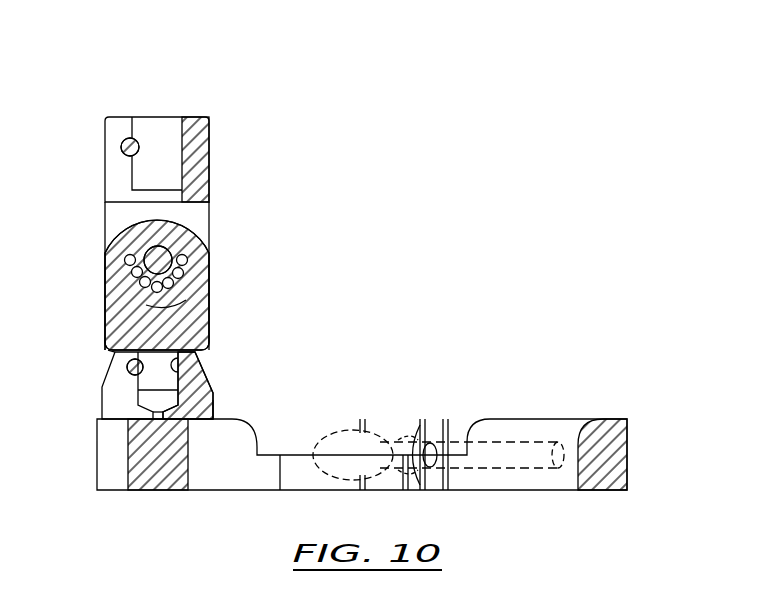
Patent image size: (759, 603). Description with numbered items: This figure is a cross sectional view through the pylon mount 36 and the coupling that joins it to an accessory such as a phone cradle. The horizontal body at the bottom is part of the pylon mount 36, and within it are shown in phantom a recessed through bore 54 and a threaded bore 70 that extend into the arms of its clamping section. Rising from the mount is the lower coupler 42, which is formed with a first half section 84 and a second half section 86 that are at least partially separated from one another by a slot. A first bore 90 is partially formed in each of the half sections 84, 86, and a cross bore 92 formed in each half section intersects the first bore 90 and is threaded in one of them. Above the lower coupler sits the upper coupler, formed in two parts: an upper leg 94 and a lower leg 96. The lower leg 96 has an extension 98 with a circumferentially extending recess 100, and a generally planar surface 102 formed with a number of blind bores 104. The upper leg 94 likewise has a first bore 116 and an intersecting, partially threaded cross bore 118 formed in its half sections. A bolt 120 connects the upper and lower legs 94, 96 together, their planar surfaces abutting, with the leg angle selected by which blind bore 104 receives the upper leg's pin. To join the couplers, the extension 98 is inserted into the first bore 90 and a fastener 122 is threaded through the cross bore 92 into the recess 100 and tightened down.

The pylon mount 36 is at (372, 419).
The lower coupler 42 is at (245, 355).
The recessed through bore 54 is at (345, 437).
The threaded bore 70 is at (528, 462).
The first half section 84 is at (154, 444).
The second half section 86 is at (213, 387).
The first bore 90 is at (145, 398).
The cross bore 92 is at (113, 345).
The upper leg 94 is at (206, 123).
The lower leg 96 is at (220, 280).
The extension 98 is at (162, 392).
The circumferentially extending recess 100 is at (203, 358).
The generally planar surface 102 is at (203, 217).
The blind bores 104 is at (183, 272).
The first bore 116 is at (160, 126).
The cross bore 118 is at (157, 128).
The bolt 120 is at (145, 248).
The fastener 122 is at (124, 138).